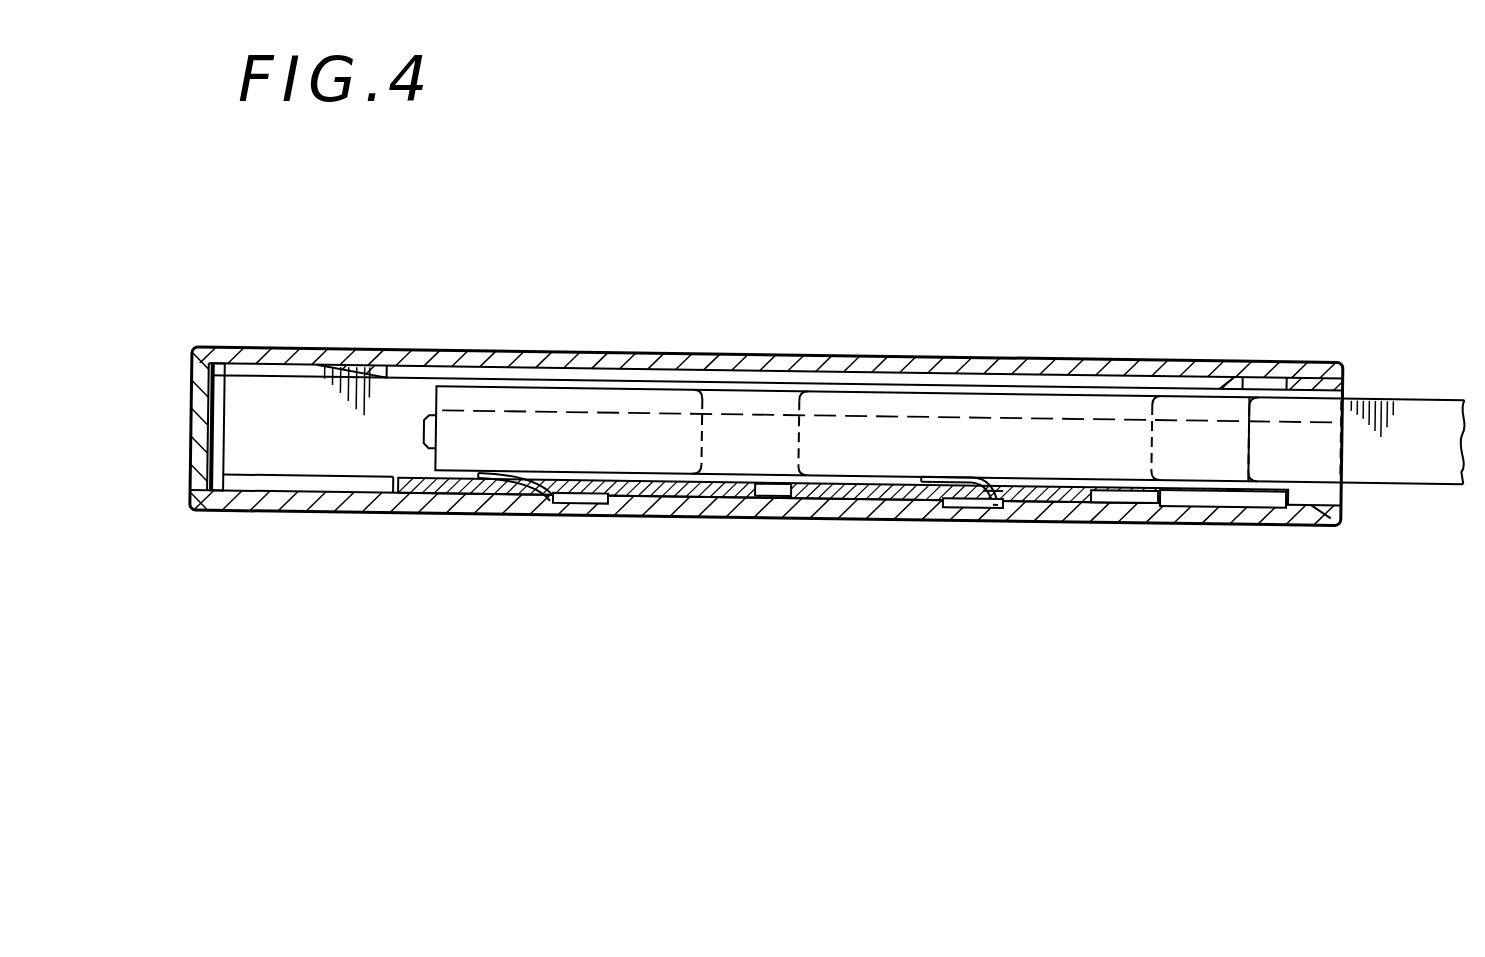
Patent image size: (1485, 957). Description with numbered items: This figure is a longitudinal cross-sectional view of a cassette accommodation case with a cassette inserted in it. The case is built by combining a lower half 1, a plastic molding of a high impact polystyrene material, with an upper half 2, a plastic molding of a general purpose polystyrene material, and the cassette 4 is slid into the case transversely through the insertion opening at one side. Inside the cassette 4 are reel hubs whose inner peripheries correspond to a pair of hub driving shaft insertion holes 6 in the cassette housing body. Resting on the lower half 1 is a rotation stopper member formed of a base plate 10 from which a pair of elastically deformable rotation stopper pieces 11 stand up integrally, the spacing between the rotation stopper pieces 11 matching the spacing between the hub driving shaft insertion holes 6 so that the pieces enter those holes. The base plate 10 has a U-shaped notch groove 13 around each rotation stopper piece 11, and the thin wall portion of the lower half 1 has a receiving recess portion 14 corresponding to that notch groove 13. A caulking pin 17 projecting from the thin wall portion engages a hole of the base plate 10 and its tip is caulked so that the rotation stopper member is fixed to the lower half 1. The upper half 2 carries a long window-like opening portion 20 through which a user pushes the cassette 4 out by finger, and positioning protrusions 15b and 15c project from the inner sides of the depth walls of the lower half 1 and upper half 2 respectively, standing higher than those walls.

The lower half 1 is at (1265, 512).
The upper half 2 is at (1280, 349).
The cassette 4 is at (1398, 381).
The hub driving shaft insertion hole 6 is at (705, 461).
The base plate 10 is at (730, 470).
The rotation stopper piece 11 is at (515, 468).
The U-shaped notch groove 13 is at (1008, 495).
The receiving recess portion 14 is at (591, 495).
The positioning protrusion 15b is at (216, 447).
The positioning protrusion 15c is at (228, 384).
The caulking pin 17 is at (773, 465).
The opening portion 20 is at (392, 362).